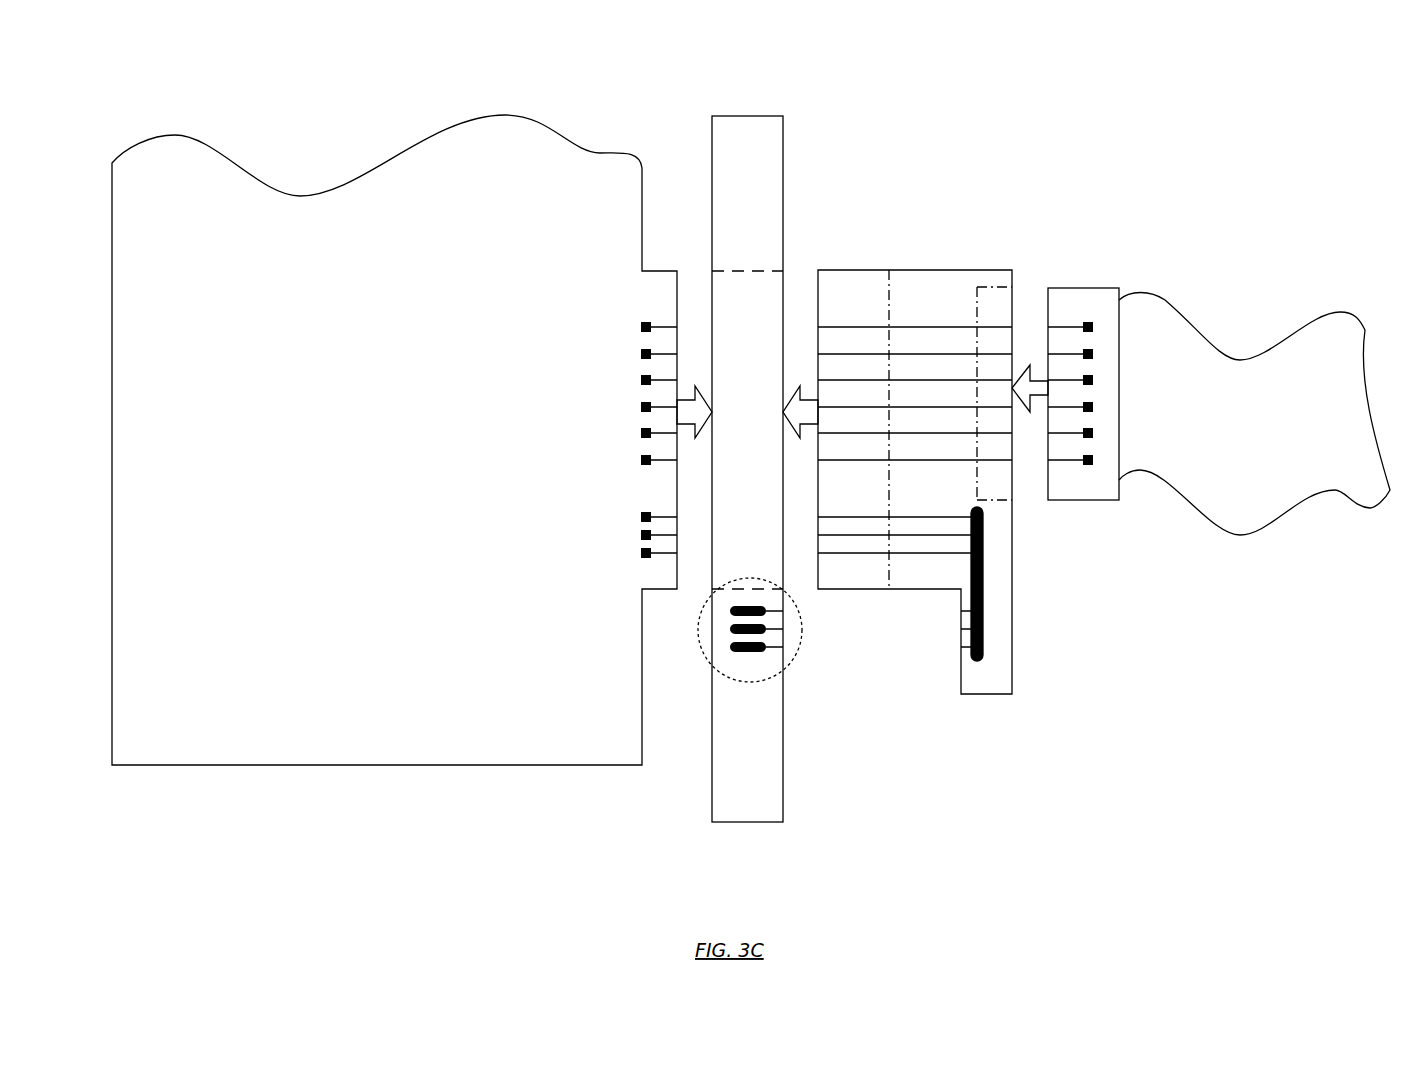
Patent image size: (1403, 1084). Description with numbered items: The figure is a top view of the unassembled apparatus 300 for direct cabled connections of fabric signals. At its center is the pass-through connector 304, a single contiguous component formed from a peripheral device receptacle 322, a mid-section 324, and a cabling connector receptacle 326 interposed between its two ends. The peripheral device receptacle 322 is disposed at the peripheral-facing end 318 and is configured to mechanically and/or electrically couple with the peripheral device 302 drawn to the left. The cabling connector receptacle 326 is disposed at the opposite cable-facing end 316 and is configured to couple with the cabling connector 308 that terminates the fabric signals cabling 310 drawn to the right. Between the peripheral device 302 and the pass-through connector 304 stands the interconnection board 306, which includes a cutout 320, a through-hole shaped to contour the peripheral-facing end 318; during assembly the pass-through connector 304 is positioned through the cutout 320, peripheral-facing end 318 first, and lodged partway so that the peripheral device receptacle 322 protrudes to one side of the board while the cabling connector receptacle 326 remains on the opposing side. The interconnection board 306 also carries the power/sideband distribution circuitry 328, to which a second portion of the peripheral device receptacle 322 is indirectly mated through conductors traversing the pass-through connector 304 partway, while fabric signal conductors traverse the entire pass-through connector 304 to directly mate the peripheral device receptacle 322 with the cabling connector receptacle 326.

The apparatus 300 is at (1148, 127).
The peripheral device 302 is at (394, 440).
The pass-through connector 304 is at (818, 765).
The interconnection board 306 is at (748, 801).
The cabling connector 308 is at (1084, 481).
The fabric signals cabling 310 is at (1254, 414).
The cable-facing end 316 is at (1012, 716).
The peripheral-facing end 318 is at (819, 712).
The cutout 320 is at (747, 430).
The peripheral device receptacle 322 is at (853, 295).
The mid-section 324 is at (933, 295).
The cabling connector receptacle 326 is at (995, 303).
The power/sideband distribution circuitry 328 is at (699, 628).